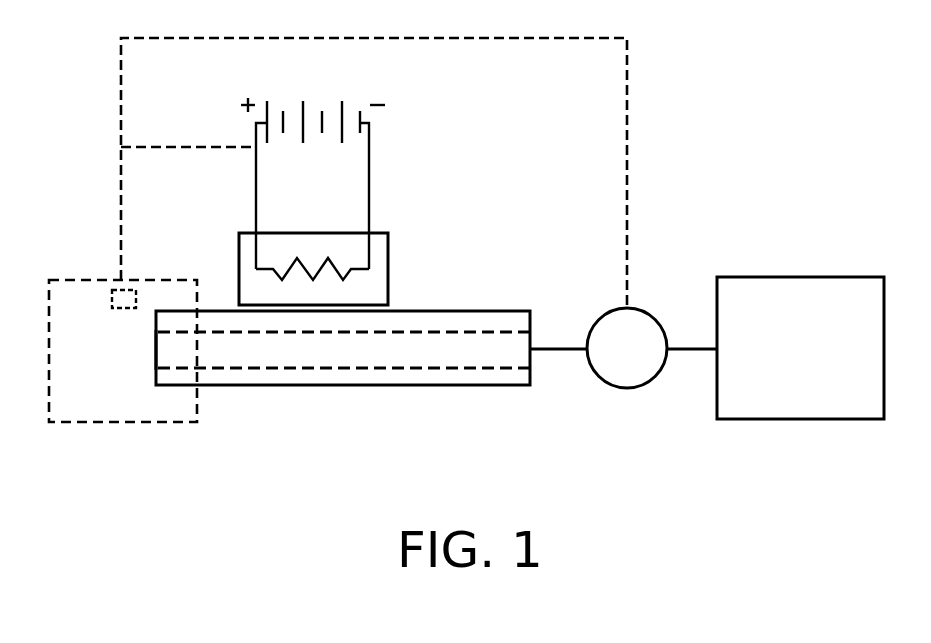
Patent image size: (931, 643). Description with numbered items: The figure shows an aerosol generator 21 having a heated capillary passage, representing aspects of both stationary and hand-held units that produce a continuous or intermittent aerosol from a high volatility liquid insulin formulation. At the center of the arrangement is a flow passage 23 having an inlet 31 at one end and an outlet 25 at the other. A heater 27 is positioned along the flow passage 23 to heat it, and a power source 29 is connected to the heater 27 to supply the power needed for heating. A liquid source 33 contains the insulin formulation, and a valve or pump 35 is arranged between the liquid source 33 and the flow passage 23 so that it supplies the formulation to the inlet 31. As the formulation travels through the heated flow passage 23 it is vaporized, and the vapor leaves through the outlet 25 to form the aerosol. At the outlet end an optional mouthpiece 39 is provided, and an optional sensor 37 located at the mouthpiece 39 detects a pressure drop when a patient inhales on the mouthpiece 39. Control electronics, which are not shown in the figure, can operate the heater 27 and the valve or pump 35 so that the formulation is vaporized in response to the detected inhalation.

The aerosol generator 21 is at (243, 452).
The flow passage 23 is at (370, 381).
The outlet 25 is at (156, 347).
The heater 27 is at (387, 268).
The power source 29 is at (359, 90).
The inlet 31 is at (532, 368).
The liquid source 33 is at (770, 420).
The valve or pump 35 is at (635, 388).
The sensor 37 is at (115, 290).
The mouthpiece 39 is at (53, 279).